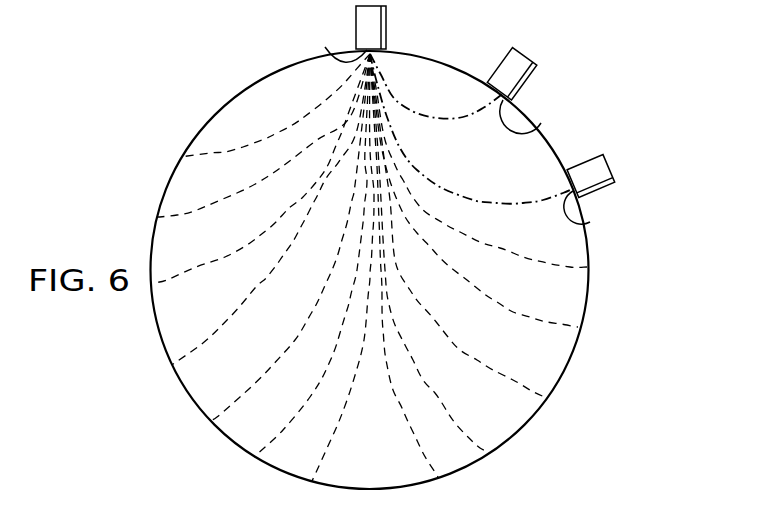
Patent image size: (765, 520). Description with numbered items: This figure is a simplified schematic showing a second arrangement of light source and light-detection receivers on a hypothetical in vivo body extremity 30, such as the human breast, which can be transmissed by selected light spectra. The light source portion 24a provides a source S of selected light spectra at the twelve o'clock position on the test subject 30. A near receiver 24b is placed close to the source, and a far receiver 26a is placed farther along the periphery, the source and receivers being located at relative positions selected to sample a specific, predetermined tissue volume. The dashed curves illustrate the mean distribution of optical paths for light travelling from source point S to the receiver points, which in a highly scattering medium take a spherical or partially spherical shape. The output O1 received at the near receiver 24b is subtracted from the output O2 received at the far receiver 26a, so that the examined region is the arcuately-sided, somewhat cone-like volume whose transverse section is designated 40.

The body extremity 30 is at (265, 68).
The sampled tissue volume transverse section 40 is at (481, 164).
The light source portion 24a is at (386, 12).
The near receiver 24b is at (536, 72).
The far receiver 26a is at (613, 184).
The source point S is at (344, 43).
The near receiver output O1 is at (526, 117).
The far receiver output O2 is at (586, 212).